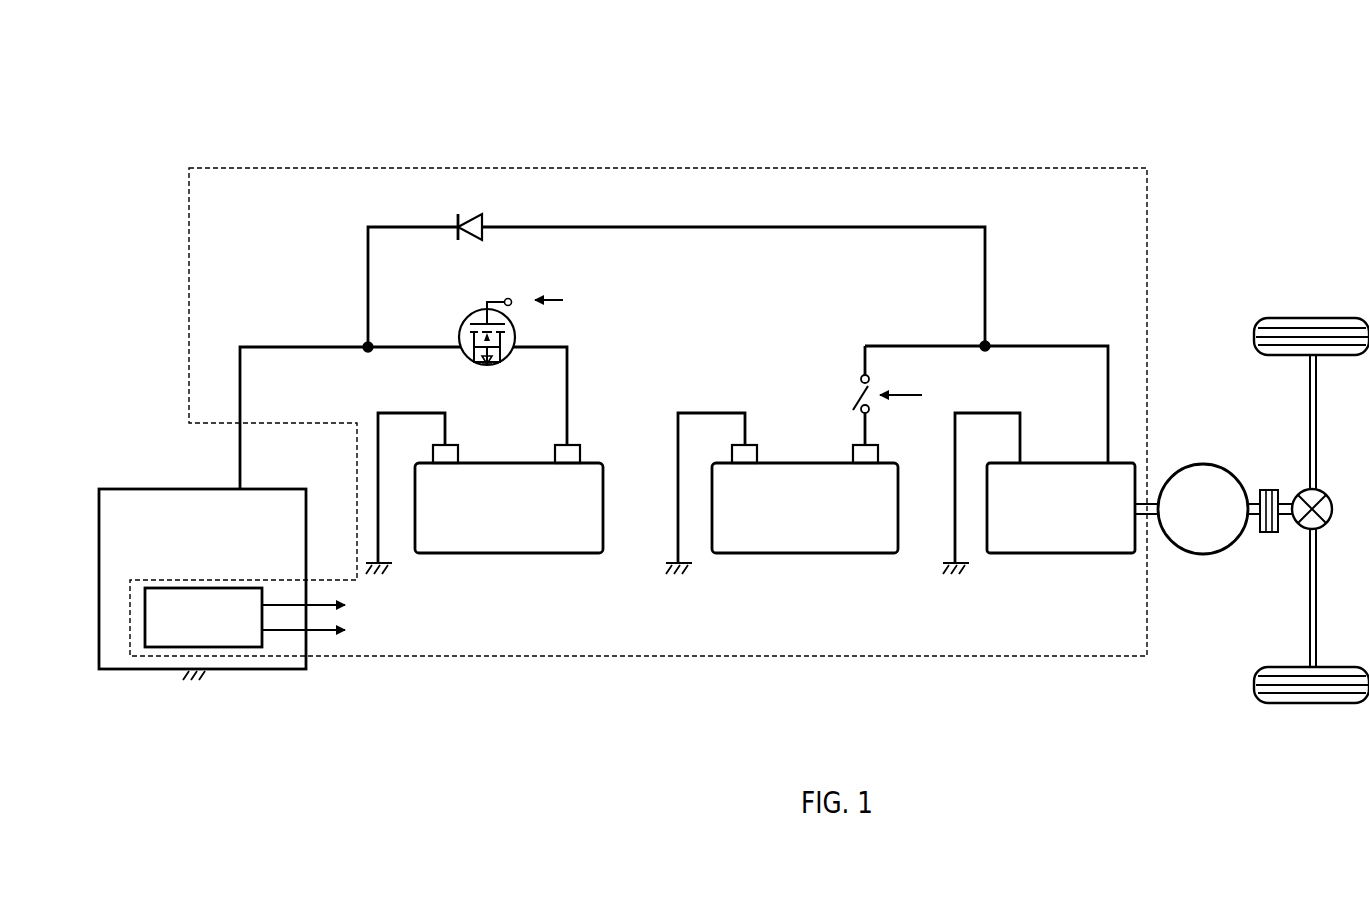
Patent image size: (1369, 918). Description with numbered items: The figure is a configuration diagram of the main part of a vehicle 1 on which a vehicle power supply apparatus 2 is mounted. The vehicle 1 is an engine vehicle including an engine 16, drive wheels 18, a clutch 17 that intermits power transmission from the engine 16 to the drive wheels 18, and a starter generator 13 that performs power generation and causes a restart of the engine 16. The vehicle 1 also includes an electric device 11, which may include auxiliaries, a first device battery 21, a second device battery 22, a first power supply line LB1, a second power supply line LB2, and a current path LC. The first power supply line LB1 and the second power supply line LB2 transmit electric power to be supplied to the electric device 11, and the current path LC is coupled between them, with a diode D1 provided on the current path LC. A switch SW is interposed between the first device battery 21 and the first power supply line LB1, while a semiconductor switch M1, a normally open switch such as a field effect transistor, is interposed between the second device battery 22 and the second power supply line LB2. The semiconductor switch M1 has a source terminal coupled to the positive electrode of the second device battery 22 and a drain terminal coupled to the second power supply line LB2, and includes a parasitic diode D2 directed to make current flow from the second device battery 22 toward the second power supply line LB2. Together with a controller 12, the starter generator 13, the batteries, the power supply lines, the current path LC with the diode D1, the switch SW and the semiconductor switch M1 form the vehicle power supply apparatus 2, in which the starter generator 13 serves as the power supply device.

The vehicle 1 is at (952, 76).
The vehicle power supply apparatus 2 is at (1125, 168).
The electric device 11 is at (135, 488).
The controller 12 is at (262, 588).
The starter generator 13 is at (1063, 462).
The engine 16 is at (1214, 465).
The clutch 17 is at (1268, 490).
The drive wheels 18 is at (1328, 318).
The first device battery 21 is at (896, 462).
The second device battery 22 is at (596, 462).
The first power supply line LB1 is at (1032, 345).
The second power supply line LB2 is at (316, 346).
The current path LC is at (700, 226).
The diode D1 is at (479, 209).
The parasitic diode D2 is at (500, 366).
The semiconductor switch M1 is at (673, 324).
The switch SW is at (955, 395).